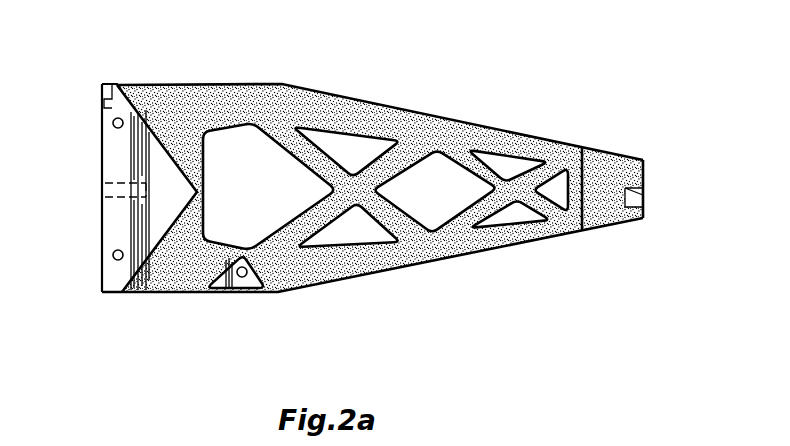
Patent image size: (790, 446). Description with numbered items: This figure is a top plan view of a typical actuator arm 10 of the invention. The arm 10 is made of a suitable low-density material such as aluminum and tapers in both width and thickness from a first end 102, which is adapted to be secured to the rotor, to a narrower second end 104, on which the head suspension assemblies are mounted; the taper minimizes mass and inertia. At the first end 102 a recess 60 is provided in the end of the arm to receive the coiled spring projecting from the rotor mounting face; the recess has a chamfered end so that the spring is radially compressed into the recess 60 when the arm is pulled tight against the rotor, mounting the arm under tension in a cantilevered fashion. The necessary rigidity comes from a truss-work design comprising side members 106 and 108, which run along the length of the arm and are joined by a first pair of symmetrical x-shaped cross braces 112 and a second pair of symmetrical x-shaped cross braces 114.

The arm 10 is at (550, 317).
The recess 60 is at (116, 84).
The first end 102 is at (101, 152).
The second end 104 is at (618, 162).
The side member 106 is at (424, 243).
The side member 108 is at (415, 128).
The first pair of symmetrical x-shaped cross braces 112 is at (322, 149).
The second pair of symmetrical x-shaped cross braces 114 is at (506, 171).